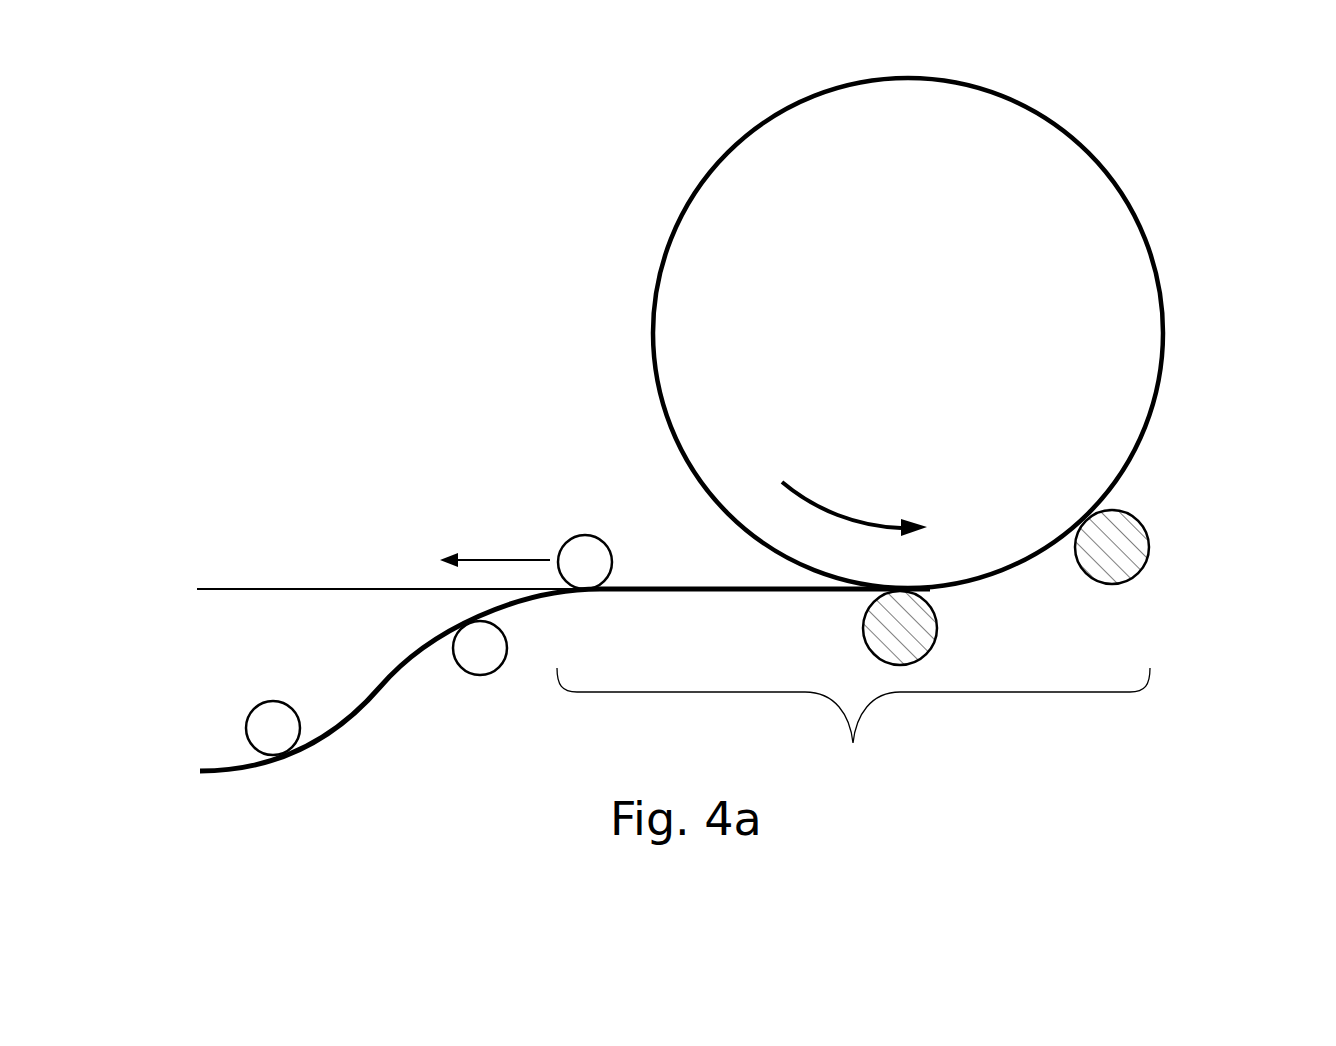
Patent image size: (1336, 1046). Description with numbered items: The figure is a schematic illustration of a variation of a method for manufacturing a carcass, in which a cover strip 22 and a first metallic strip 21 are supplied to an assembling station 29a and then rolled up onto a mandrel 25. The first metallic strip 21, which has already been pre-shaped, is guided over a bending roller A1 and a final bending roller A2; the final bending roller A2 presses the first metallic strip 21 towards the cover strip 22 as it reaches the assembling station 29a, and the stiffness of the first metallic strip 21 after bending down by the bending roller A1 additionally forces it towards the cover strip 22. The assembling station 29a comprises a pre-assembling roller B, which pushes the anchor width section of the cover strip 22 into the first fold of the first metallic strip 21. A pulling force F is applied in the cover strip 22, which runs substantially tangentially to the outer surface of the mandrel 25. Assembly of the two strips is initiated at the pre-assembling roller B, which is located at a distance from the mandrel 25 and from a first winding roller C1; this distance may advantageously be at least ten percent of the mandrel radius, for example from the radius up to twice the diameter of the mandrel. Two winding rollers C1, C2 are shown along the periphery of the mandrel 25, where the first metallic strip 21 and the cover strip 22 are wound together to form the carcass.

The mandrel 25 is at (683, 292).
The cover strip 22 is at (262, 589).
The first metallic strip 21 is at (374, 690).
The bending roller A1 is at (253, 705).
The final bending roller A2 is at (498, 670).
The pre-assembling roller B is at (589, 535).
The pulling force F is at (495, 552).
The first winding roller C1 is at (940, 617).
The second winding roller C2 is at (1150, 540).
The assembling station 29a is at (853, 724).